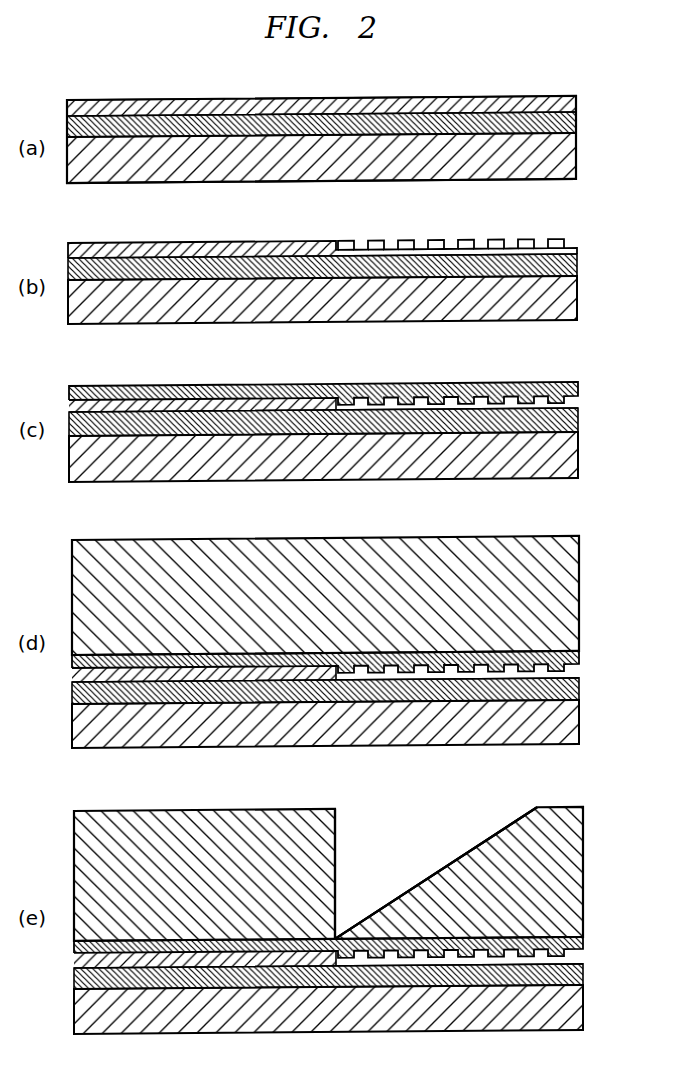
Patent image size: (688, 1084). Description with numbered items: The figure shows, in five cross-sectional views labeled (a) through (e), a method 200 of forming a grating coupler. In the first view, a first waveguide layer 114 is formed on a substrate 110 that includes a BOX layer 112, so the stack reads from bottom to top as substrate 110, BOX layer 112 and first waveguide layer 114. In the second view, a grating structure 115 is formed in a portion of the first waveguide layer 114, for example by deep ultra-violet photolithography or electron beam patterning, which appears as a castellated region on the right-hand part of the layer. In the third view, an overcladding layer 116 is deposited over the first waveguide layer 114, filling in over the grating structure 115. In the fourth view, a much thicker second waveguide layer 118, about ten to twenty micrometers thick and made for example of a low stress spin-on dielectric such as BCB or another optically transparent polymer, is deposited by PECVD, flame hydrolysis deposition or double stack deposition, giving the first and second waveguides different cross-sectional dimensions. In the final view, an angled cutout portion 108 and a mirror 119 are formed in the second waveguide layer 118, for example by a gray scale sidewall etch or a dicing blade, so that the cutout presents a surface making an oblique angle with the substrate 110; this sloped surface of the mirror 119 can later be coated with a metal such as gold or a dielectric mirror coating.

The method of forming a photonic structure 200 is at (519, 71).
The substrate 110 is at (577, 156).
The BOX layer 112 is at (577, 124).
The first waveguide layer 114 is at (576, 100).
The grating structure 115 is at (537, 239).
The overcladding layer 116 is at (579, 388).
The second waveguide layer 118 is at (579, 598).
The angled cutout portion 108 is at (363, 864).
The mirror 119 is at (453, 861).